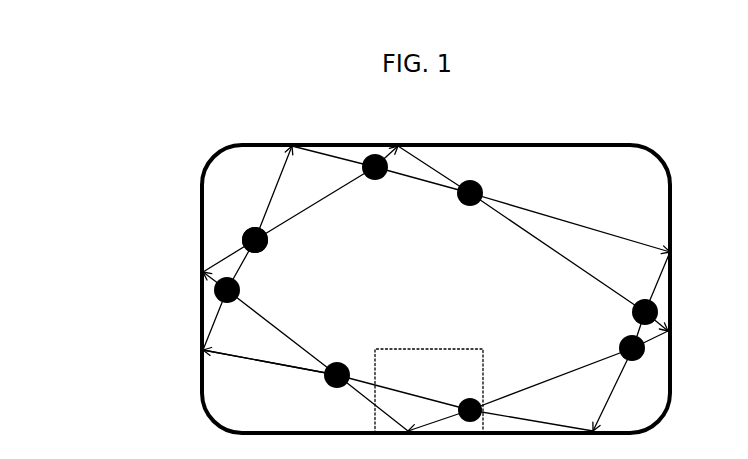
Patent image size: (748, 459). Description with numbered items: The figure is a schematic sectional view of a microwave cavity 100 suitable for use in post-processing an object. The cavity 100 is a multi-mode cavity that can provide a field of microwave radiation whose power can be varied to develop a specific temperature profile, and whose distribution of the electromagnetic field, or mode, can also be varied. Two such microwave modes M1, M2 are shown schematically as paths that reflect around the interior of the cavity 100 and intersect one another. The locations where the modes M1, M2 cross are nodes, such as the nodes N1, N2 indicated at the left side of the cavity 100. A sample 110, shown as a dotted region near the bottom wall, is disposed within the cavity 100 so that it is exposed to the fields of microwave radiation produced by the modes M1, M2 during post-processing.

The microwave cavity 100 is at (555, 120).
The sample 110 is at (445, 373).
The microwave mode M1 is at (268, 193).
The node N1 is at (240, 240).
The microwave mode M2 is at (267, 325).
The node N2 is at (295, 386).